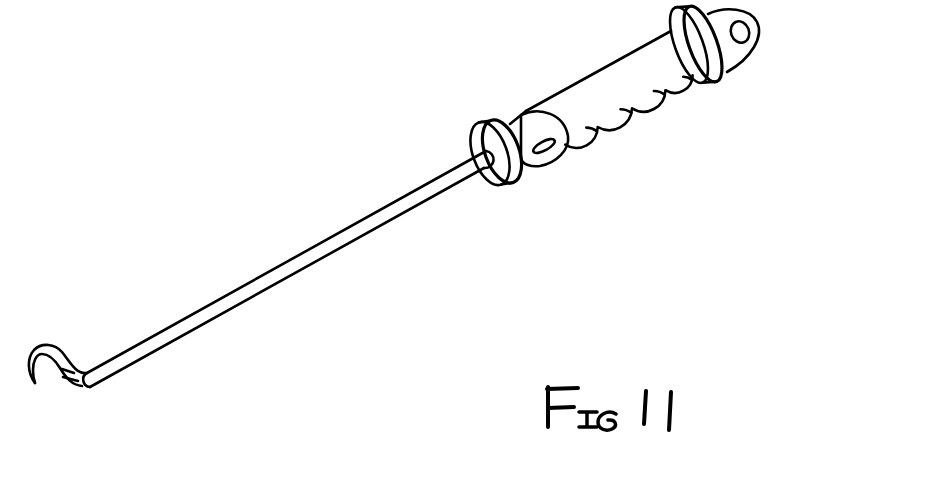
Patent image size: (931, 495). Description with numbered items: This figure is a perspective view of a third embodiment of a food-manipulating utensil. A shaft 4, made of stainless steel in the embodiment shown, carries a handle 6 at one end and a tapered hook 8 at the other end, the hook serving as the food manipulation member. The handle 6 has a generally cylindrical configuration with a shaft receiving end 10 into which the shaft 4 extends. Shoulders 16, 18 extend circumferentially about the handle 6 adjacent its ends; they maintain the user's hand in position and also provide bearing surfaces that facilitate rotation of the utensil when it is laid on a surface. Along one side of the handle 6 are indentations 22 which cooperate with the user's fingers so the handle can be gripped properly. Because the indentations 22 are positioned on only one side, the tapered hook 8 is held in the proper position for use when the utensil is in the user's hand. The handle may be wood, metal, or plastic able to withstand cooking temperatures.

The shaft 4 is at (305, 268).
The handle 6 is at (680, 107).
The tapered hook 8 is at (62, 343).
The shaft receiving end 10 is at (483, 147).
The shoulder 16 is at (515, 168).
The shoulder 18 is at (728, 78).
The indentations 22 is at (648, 113).